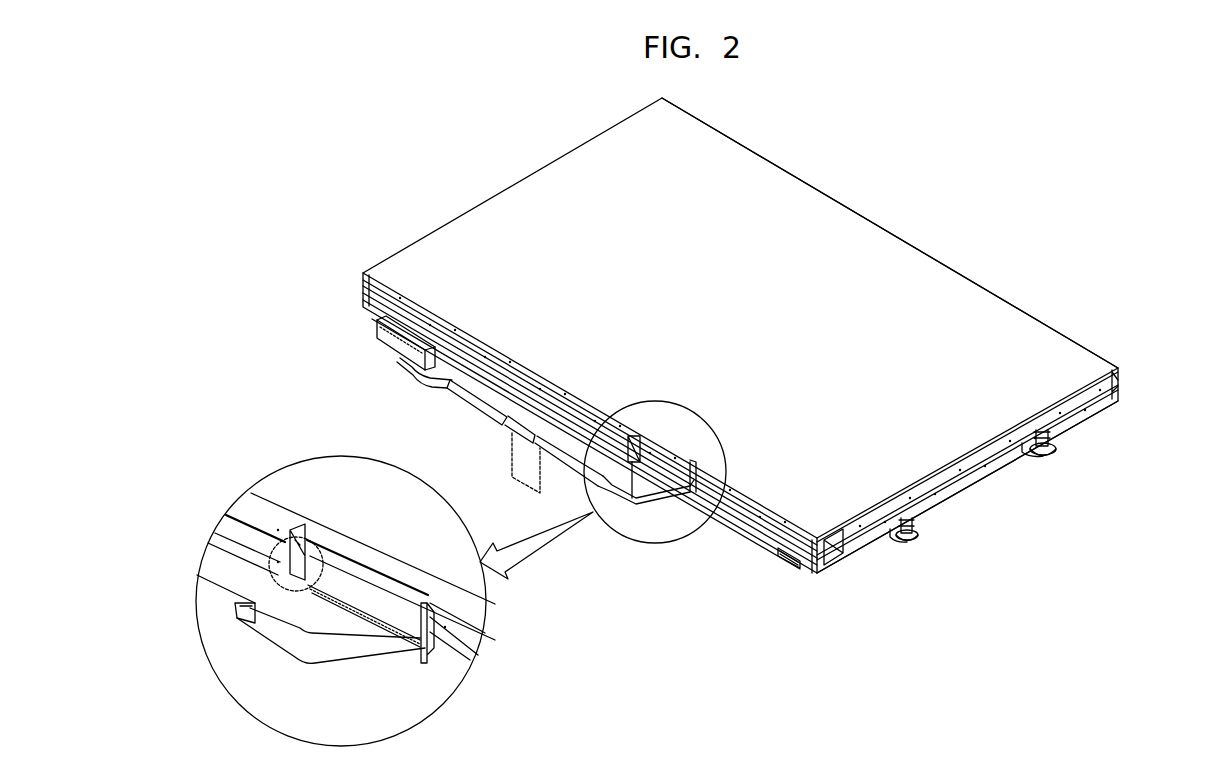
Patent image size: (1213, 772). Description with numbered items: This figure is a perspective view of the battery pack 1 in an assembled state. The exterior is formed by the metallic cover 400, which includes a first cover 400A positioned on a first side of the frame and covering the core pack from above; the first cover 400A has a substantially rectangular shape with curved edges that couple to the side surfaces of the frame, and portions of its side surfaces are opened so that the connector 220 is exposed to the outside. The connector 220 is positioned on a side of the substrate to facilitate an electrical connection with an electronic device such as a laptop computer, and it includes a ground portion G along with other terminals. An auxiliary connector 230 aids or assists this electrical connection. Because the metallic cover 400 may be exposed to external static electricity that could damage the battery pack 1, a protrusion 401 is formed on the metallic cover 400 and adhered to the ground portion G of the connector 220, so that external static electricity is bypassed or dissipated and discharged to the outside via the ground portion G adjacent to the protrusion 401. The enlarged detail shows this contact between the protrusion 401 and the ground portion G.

The battery pack 1 is at (1030, 181).
The auxiliary connector 230 is at (382, 337).
The protrusion 401 is at (631, 436).
The connector 220 is at (684, 477).
The metallic cover 400 is at (1156, 331).
The first cover 400A is at (1043, 354).
The ground portion G is at (322, 553).